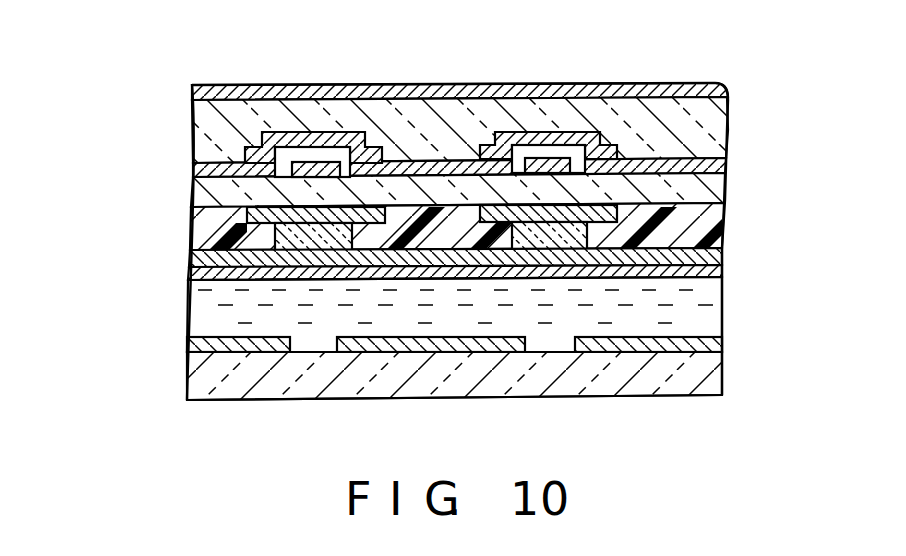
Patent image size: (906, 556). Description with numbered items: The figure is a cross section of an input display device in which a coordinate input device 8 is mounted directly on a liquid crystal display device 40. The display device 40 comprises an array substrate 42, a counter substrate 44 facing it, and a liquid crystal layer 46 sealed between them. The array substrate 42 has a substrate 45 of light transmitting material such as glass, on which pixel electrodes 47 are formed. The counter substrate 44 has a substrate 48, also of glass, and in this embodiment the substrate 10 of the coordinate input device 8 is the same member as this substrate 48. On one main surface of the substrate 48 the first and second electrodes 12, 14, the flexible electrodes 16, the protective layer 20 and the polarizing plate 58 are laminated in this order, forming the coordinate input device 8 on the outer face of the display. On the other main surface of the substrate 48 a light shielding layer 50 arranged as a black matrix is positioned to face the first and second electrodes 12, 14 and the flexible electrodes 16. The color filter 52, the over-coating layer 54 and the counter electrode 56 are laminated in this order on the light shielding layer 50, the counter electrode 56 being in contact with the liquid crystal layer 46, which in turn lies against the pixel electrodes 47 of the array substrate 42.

The coordinate input device 8 is at (663, 76).
The polarizing plate 58 is at (260, 85).
The protective layer 20 is at (448, 98).
The flexible electrodes 16 is at (313, 132).
The first electrodes 12 is at (331, 162).
The second electrodes 14 is at (192, 165).
The substrate 10 is at (727, 190).
The substrate 48 is at (520, 209).
The counter substrate 44 is at (166, 204).
The light shielding layer 50 is at (200, 232).
The color filter 52 is at (725, 230).
The over-coating layer 54 is at (200, 258).
The counter electrode 56 is at (197, 272).
The liquid crystal display device 40 is at (752, 304).
The liquid crystal layer 46 is at (200, 322).
The pixel electrodes 47 is at (455, 356).
The substrate 45 is at (683, 382).
The array substrate 42 is at (745, 383).